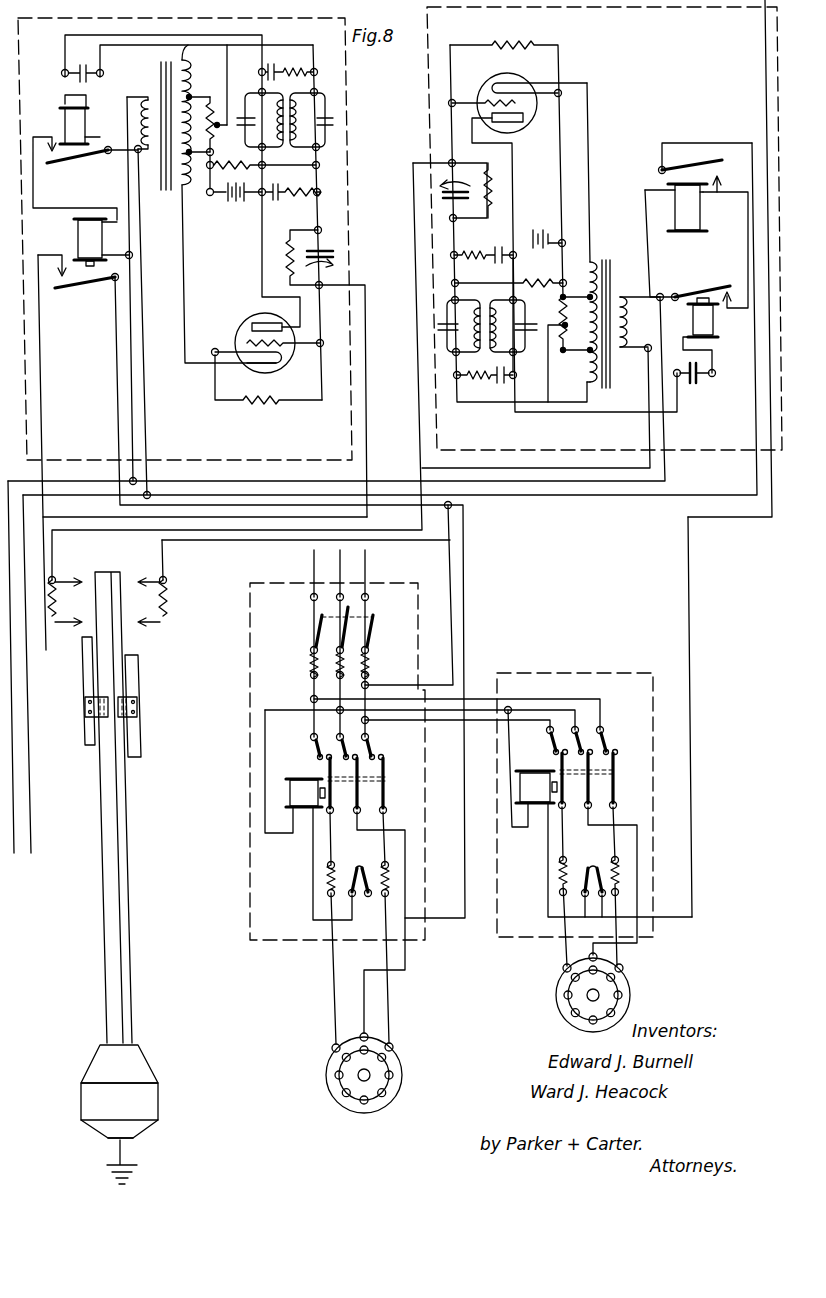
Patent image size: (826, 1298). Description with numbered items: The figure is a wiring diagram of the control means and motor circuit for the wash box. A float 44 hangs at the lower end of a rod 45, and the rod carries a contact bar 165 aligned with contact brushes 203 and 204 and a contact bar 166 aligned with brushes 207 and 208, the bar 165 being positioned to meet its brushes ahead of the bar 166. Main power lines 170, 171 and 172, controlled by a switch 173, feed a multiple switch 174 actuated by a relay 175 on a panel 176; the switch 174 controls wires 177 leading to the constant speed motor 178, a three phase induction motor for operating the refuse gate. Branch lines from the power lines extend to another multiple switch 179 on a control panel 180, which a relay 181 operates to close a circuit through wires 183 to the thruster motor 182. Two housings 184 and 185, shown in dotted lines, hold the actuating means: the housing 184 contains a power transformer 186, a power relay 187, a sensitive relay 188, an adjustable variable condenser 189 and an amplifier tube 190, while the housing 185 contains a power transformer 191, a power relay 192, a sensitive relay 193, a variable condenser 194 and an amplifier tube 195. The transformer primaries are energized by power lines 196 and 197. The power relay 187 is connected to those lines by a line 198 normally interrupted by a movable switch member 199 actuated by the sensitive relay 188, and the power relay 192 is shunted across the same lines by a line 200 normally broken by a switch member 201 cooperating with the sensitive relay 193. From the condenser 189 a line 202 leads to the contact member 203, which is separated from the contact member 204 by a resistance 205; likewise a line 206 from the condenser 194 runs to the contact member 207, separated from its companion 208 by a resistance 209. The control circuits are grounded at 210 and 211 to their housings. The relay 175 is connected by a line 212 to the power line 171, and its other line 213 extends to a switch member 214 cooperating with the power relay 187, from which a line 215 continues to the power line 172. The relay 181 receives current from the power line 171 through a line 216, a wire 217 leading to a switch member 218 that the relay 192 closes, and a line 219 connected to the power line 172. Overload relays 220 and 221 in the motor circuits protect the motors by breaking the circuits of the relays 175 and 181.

The float 44 is at (150, 1070).
The rod 45 is at (128, 886).
The contact bar 165 is at (84, 727).
The contact bar 166 is at (138, 727).
The main power line 170 is at (313, 568).
The main power line 171 is at (336, 600).
The main power line 172 is at (363, 580).
The switch 173 is at (375, 634).
The multiple switch 174 is at (370, 750).
The relay 175 is at (300, 779).
The panel 176 is at (265, 800).
The wires 177 is at (336, 1018).
The constant speed motor 178 is at (403, 1062).
The multiple switch 179 is at (618, 752).
The control panel 180 is at (622, 672).
The relay 181 is at (532, 771).
The motor 182 is at (630, 982).
The wires 183 is at (608, 838).
The housing 184 is at (345, 112).
The housing 185 is at (428, 78).
The power transformer 186 is at (172, 190).
The power relay 187 is at (76, 236).
The sensitive relay 188 is at (63, 116).
The adjustable variable condenser 189 is at (334, 250).
The amplifier tube 190 is at (252, 315).
The power transformer 191 is at (605, 262).
The power relay 192 is at (690, 215).
The sensitive relay 193 is at (712, 325).
The variable condenser 194 is at (441, 192).
The amplifier tube 195 is at (518, 132).
The power line 196 is at (118, 347).
The power line 197 is at (136, 386).
The line 198 is at (40, 190).
The movable switch member 199 is at (75, 155).
The line 200 is at (740, 256).
The switch member 201 is at (724, 290).
The line 202 is at (367, 355).
The contact member 203 is at (79, 574).
The contact member 204 is at (78, 640).
The resistance 205 is at (52, 605).
The line 206 is at (420, 416).
The contact member 207 is at (147, 572).
The contact member 208 is at (145, 622).
The resistance 209 is at (170, 602).
The ground 210 is at (240, 200).
The ground 211 is at (541, 232).
The line 212 is at (250, 742).
The line 213 is at (328, 882).
The switch member 214 is at (86, 290).
The line 215 is at (41, 383).
The line 216 is at (512, 827).
The wire 217 is at (692, 644).
The switch member 218 is at (704, 166).
The line 219 is at (757, 472).
The overload relay 220 is at (359, 905).
The overload relay 221 is at (593, 905).